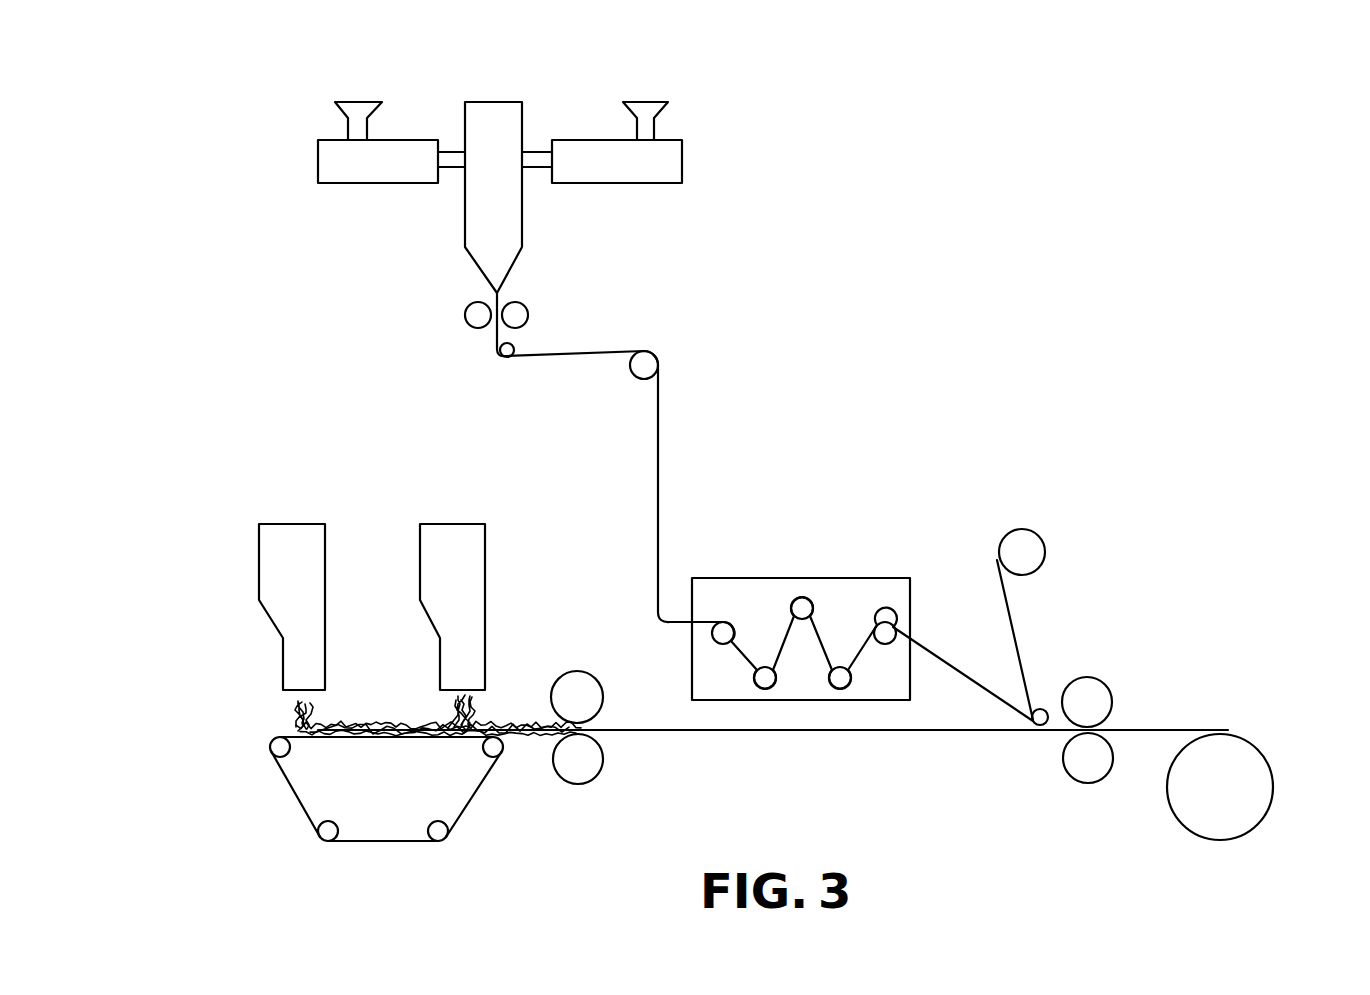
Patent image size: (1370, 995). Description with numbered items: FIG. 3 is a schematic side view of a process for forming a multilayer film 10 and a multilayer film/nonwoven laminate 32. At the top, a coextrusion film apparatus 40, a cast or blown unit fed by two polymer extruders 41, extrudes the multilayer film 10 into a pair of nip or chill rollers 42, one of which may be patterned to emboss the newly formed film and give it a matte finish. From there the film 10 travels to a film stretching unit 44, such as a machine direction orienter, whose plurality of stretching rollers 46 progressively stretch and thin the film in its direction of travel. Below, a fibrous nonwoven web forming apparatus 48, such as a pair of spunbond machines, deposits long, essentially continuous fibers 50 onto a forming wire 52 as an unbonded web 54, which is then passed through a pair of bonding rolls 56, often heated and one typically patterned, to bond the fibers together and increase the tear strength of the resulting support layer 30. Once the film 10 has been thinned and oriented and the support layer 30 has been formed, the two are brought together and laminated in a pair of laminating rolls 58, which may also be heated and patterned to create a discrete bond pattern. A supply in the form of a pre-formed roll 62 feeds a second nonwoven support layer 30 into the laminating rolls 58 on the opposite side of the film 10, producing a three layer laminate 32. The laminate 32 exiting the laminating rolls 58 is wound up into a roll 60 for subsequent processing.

The multilayer film 10 is at (557, 355).
The support layer 30 is at (685, 733).
The multilayer film/nonwoven laminate 32 is at (1177, 728).
The coextrusion film apparatus 40 is at (495, 117).
The polymer extruders 41 is at (316, 155).
The nip or chill rollers 42 is at (464, 313).
The film stretching unit 44 is at (833, 562).
The stretching rollers 46 is at (728, 620).
The fibrous nonwoven web forming apparatus 48 is at (291, 529).
The fibers 50 is at (437, 707).
The forming wire 52 is at (390, 842).
The unbonded web 54 is at (531, 721).
The bonding rolls 56 is at (588, 670).
The laminating rolls 58 is at (1102, 678).
The roll 60 is at (1260, 826).
The supply of second support layer 62 is at (1042, 537).